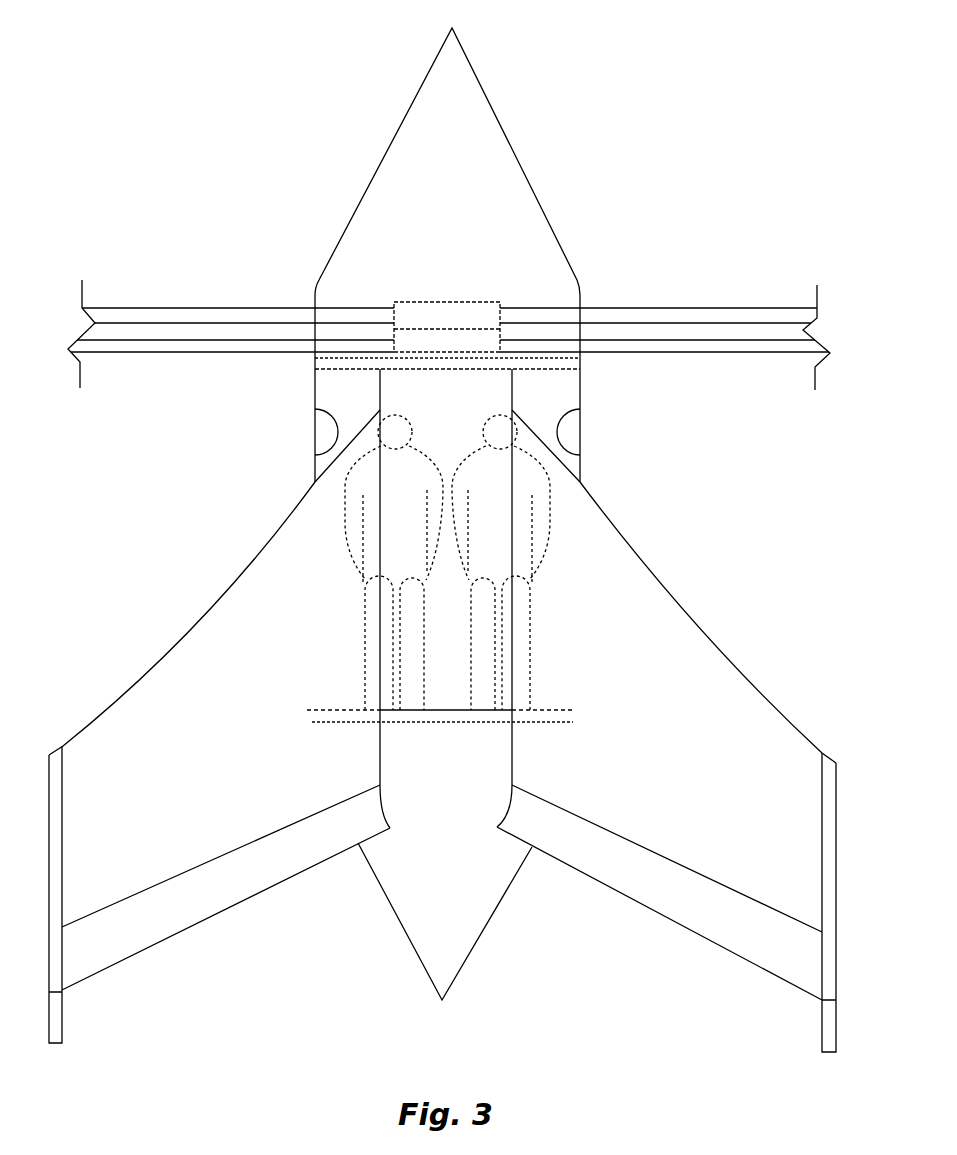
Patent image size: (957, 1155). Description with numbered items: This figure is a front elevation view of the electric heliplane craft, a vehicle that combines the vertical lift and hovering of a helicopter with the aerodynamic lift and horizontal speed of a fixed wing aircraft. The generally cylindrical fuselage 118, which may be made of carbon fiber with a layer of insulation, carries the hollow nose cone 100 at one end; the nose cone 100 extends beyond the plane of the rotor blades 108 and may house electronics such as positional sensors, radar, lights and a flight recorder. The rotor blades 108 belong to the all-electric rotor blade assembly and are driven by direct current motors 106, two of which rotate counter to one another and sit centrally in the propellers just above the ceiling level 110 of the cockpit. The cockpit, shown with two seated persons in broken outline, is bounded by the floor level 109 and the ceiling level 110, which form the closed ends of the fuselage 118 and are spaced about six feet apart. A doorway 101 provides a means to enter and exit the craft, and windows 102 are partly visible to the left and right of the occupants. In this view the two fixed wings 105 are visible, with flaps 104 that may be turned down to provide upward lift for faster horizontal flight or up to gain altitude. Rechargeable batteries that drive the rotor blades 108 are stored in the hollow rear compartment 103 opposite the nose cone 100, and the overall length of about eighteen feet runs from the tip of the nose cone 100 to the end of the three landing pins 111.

The nose cone 100 is at (393, 133).
The doorway 101 is at (548, 394).
The windows 102 is at (315, 435).
The rear compartment 103 is at (486, 925).
The flaps 104 is at (230, 907).
The fixed wings 105 is at (195, 627).
The direct current motors 106 is at (442, 302).
The rotor blades 108 is at (627, 308).
The floor level 109 is at (330, 708).
The ceiling level 110 is at (322, 372).
The landing pins 111 is at (63, 1027).
The fuselage 118 is at (580, 381).